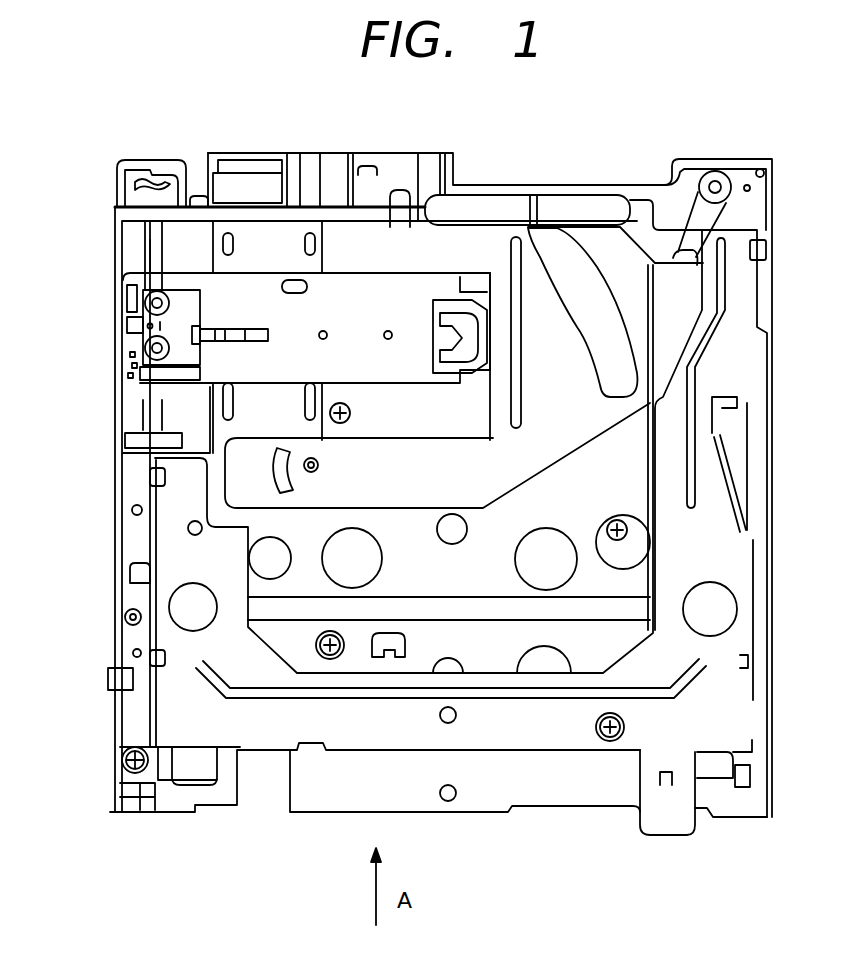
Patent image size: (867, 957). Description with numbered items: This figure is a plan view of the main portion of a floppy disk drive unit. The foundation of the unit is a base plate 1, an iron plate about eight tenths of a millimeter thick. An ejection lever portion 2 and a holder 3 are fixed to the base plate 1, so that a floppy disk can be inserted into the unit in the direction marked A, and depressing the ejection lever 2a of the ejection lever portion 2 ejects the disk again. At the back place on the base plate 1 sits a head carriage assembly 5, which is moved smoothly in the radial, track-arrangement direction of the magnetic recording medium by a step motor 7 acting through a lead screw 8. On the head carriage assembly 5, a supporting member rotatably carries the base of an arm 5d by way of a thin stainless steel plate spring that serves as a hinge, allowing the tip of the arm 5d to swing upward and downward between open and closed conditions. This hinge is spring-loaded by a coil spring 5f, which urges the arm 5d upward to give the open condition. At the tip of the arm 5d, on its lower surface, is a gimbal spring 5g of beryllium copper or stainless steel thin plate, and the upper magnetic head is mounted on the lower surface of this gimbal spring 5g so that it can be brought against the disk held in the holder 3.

The base plate 1 is at (564, 188).
The ejection lever portion 2 is at (265, 737).
The ejection lever 2a is at (672, 820).
The holder 3 is at (487, 655).
The head carriage assembly 5 is at (220, 368).
The arm 5d is at (348, 292).
The coil spring 5f is at (125, 328).
The gimbal spring 5g is at (473, 303).
The step motor 7 is at (157, 160).
The lead screw 8 is at (150, 245).